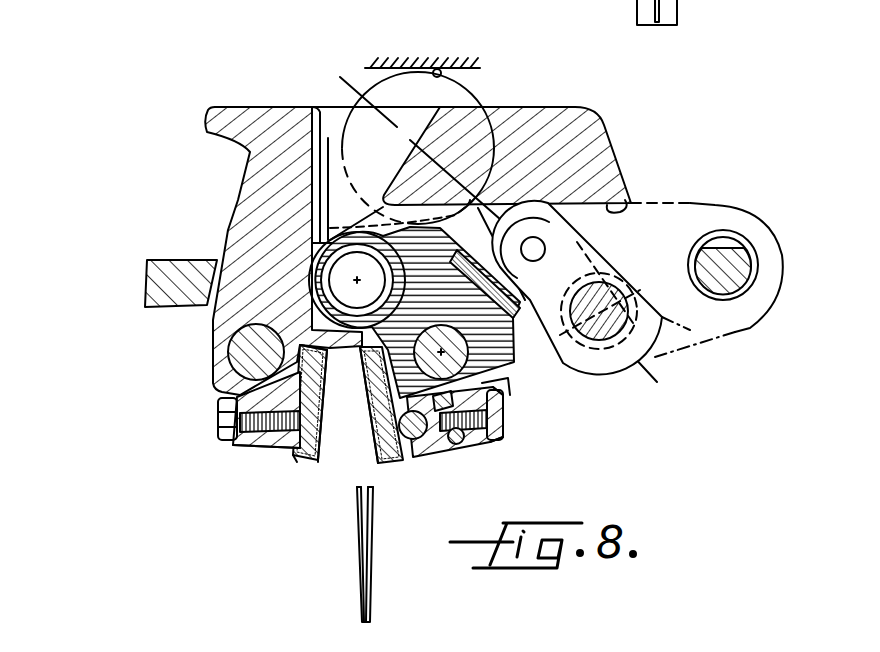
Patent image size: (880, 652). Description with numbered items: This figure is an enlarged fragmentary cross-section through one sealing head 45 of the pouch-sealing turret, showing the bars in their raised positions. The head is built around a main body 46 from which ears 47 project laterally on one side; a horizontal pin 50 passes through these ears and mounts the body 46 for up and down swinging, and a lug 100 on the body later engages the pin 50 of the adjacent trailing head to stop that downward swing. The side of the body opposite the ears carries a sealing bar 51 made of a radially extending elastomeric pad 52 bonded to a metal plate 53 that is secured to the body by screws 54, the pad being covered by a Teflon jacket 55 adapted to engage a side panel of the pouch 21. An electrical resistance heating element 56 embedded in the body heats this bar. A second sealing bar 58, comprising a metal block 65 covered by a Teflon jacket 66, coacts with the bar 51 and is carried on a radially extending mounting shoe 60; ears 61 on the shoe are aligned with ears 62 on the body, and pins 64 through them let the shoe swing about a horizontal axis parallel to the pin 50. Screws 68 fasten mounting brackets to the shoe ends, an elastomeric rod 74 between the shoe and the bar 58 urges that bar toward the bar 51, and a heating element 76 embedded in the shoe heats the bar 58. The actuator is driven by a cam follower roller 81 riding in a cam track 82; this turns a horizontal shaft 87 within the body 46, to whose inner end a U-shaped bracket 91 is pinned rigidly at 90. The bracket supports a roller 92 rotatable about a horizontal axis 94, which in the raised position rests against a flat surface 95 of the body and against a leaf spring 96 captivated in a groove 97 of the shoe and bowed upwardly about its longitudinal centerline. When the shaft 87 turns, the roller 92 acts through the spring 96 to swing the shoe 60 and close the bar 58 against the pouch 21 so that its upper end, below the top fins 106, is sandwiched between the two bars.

The pouch 21 is at (355, 595).
The sealing head 45 is at (185, 385).
The main body 46 is at (240, 198).
The ears 47 is at (745, 325).
The horizontal pin 50 is at (735, 250).
The sealing bar 51 is at (297, 462).
The elastomeric pad 52 is at (317, 437).
The metal plate 53 is at (255, 450).
The screws 54 is at (222, 425).
The Teflon jacket 55 is at (318, 462).
The electrical resistance heating element 56 is at (230, 353).
The second sealing bar 58 is at (403, 463).
The mounting shoe 60 is at (483, 447).
The ears 61 is at (390, 223).
The ears 62 is at (403, 247).
The pins 64 is at (332, 278).
The metal block 65 is at (375, 378).
The Teflon jacket 66 is at (372, 420).
The screws 68 is at (503, 425).
The elastomeric rod 74 is at (437, 453).
The electrical resistance heating element 76 is at (500, 390).
The roller 81 is at (368, 88).
The cam track 82 is at (440, 68).
The horizontal shaft 87 is at (622, 313).
The pin 90 is at (663, 312).
The U-shaped bracket 91 is at (605, 247).
The roller 92 is at (512, 203).
The horizontal axis 94 is at (548, 228).
The flat surface 95 is at (633, 200).
The leaf spring 96 is at (468, 253).
The groove 97 is at (480, 294).
The lug 100 is at (224, 107).
The top fins 106 is at (322, 547).